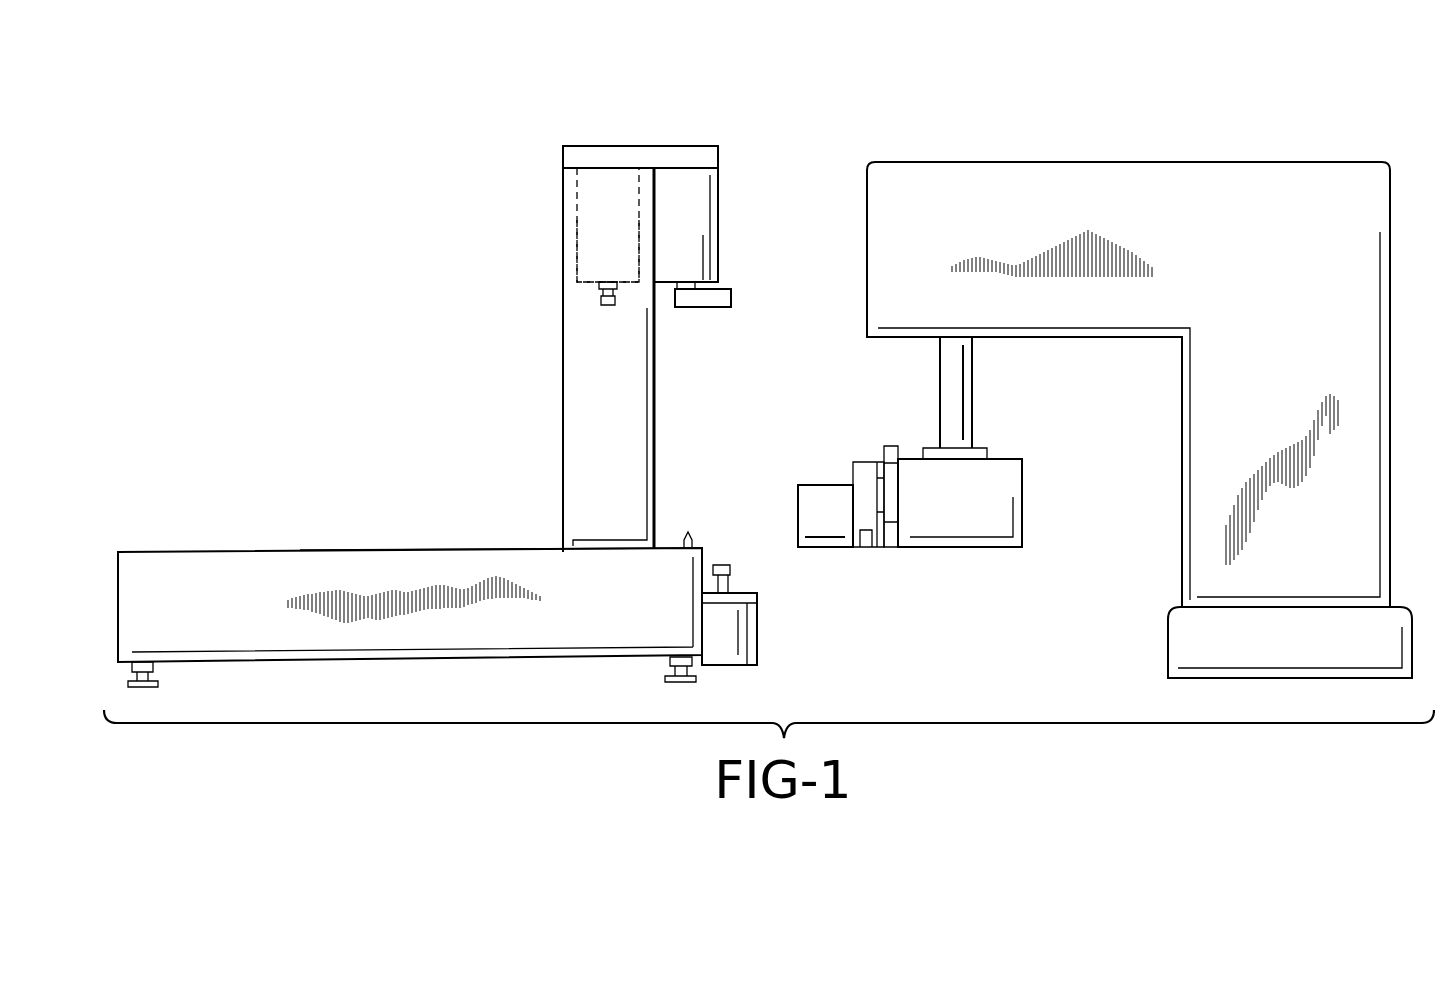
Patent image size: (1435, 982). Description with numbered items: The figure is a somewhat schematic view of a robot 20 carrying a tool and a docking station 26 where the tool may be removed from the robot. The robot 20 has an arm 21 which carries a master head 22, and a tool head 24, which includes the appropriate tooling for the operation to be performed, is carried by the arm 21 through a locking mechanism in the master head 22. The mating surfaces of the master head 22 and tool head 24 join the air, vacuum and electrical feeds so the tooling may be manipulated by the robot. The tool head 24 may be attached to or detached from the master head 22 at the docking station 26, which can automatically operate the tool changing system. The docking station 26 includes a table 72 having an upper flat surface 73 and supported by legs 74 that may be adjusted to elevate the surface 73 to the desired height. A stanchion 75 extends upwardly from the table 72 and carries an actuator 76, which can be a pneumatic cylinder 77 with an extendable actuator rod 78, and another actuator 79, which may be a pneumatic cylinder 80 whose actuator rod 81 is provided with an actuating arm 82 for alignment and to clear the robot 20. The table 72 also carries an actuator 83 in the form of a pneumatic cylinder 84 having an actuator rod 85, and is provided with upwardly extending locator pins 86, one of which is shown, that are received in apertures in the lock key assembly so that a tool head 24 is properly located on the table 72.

The robot 20 is at (1098, 188).
The arm 21 is at (953, 400).
The master head 22 is at (985, 505).
The tool head 24 is at (813, 505).
The docking station 26 is at (455, 392).
The table 72 is at (193, 586).
The upper flat surface 73 is at (370, 552).
The legs 74 is at (158, 683).
The stanchion 75 is at (600, 408).
The actuator 76 is at (568, 190).
The pneumatic cylinder 77 is at (607, 213).
The actuator rod 78 is at (605, 303).
The actuator 79 is at (720, 182).
The pneumatic cylinder 80 is at (697, 200).
The actuator rod 81 is at (690, 282).
The actuating arm 82 is at (718, 305).
The actuator 83 is at (757, 650).
The pneumatic cylinder 84 is at (743, 625).
The actuator rod 85 is at (728, 570).
The locator pins 86 is at (690, 532).